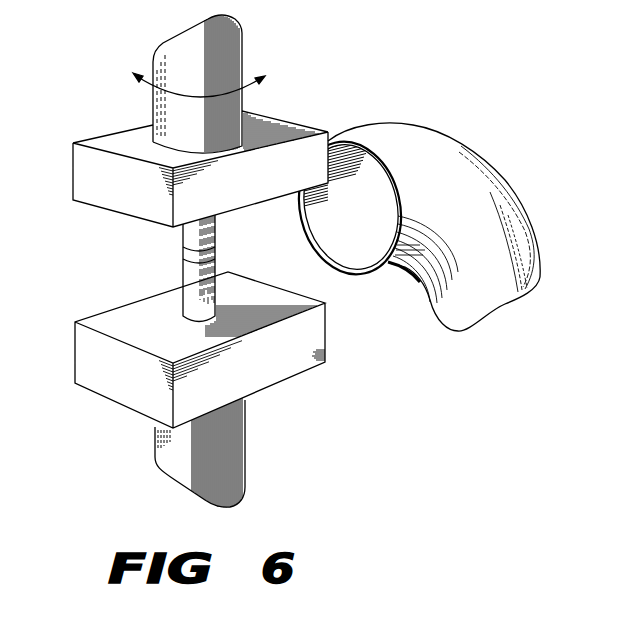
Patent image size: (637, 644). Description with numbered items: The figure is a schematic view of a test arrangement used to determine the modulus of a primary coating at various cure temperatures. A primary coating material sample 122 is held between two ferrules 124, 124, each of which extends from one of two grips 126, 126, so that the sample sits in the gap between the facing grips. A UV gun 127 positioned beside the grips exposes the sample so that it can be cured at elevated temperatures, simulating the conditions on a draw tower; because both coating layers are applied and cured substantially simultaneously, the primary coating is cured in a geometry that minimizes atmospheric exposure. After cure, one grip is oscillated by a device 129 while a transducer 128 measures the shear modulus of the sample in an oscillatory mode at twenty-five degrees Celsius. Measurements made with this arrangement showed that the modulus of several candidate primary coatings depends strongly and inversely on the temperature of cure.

The primary coating material sample 122 is at (188, 255).
The ferrules 124 is at (188, 237).
The grips 126 is at (292, 127).
The UV gun 127 is at (450, 141).
The transducer 128 is at (233, 445).
The device 129 is at (233, 53).